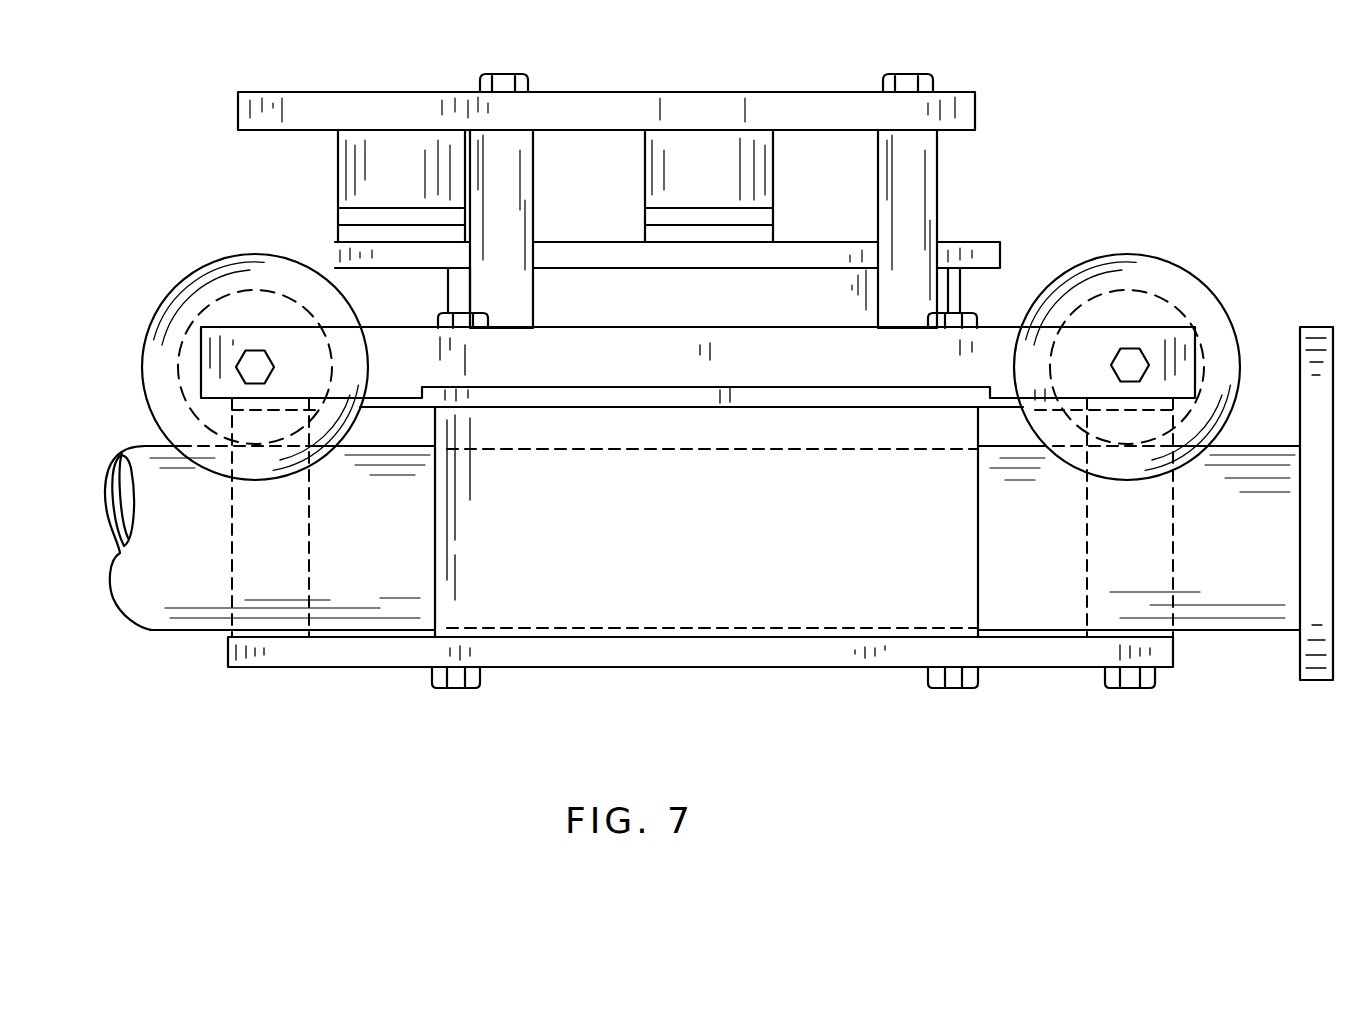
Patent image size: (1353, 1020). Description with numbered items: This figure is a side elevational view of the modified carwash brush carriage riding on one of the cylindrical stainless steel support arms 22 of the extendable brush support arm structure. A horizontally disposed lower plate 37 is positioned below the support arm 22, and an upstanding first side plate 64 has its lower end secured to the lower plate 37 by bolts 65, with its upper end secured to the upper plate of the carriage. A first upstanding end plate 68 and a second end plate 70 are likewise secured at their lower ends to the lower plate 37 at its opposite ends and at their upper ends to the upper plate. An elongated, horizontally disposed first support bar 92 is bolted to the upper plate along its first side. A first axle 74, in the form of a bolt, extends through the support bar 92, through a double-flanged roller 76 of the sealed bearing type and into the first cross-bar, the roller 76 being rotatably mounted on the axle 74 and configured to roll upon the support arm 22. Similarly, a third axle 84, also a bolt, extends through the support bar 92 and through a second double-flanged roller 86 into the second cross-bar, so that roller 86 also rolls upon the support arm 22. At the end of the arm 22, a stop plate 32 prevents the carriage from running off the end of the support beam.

The cylindrical support arm 22 is at (158, 605).
The stop plate 32 is at (1313, 327).
The lower plate 37 is at (728, 668).
The first side plate 64 is at (683, 562).
The bolts 65 is at (958, 690).
The first upstanding end plate 68 is at (1125, 555).
The second end plate 70 is at (282, 502).
The first axle 74 is at (1137, 362).
The double-flanged roller 76 is at (1153, 262).
The third axle 84 is at (242, 367).
The double-flanged roller 86 is at (230, 272).
The first support bar 92 is at (782, 338).